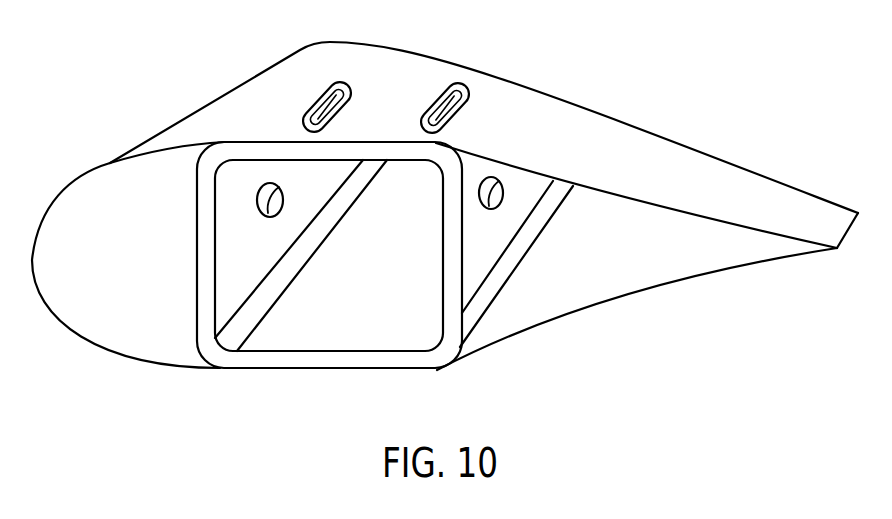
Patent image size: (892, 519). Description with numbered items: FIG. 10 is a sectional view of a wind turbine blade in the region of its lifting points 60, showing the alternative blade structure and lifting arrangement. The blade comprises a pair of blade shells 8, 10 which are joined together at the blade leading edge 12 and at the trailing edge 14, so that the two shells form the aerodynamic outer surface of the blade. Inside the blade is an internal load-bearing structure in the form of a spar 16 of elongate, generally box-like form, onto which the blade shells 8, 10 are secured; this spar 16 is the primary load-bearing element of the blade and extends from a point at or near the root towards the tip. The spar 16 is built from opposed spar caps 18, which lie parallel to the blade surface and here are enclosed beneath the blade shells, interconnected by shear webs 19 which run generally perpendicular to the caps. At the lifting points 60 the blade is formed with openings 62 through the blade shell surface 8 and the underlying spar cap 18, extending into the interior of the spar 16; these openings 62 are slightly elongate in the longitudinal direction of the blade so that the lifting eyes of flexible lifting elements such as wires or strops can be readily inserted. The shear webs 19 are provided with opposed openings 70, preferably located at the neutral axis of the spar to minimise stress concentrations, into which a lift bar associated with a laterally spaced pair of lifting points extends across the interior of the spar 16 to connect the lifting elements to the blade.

The blade shell 8 is at (228, 105).
The blade shell 10 is at (180, 365).
The blade leading edge 12 is at (43, 213).
The trailing edge 14 is at (803, 203).
The spar 16 is at (351, 271).
The spar caps 18 is at (405, 150).
The shear webs 19 is at (197, 270).
The lifting points 60 is at (440, 230).
The openings 62 is at (458, 88).
The openings 70 is at (268, 217).